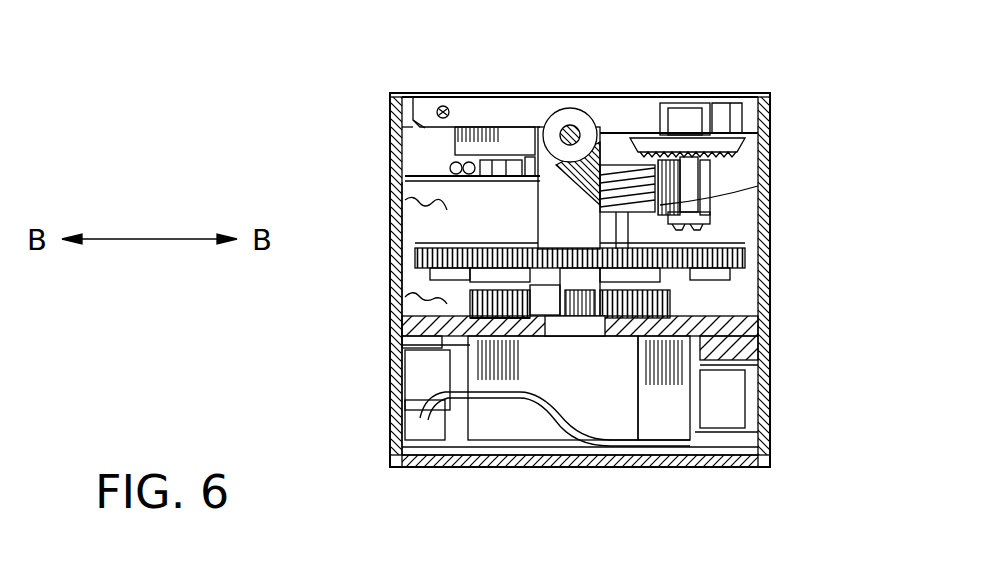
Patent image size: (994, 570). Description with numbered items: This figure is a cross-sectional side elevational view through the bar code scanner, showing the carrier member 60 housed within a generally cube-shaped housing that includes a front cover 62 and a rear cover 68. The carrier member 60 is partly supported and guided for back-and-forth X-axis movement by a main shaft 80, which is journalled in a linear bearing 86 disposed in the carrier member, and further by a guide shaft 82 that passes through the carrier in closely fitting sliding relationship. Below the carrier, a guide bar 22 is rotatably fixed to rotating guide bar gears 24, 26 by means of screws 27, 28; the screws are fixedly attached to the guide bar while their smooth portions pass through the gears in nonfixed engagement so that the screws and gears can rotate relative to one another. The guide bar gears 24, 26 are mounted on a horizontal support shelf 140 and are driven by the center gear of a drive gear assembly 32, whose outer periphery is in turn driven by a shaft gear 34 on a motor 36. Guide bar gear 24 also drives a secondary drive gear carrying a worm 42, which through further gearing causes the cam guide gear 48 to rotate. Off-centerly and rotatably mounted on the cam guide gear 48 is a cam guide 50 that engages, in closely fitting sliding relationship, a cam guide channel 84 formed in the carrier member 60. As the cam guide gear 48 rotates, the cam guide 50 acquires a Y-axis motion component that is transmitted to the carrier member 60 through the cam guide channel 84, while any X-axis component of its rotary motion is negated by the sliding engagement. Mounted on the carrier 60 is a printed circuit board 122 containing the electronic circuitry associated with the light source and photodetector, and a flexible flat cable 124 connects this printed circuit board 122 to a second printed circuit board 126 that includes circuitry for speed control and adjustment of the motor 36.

The guide bar 22 is at (398, 185).
The guide bar gear 24 is at (762, 258).
The guide bar gear 26 is at (412, 255).
The screw 27 is at (642, 294).
The screw 28 is at (420, 283).
The drive gear assembly 32 is at (412, 348).
The shaft gear 34 is at (618, 336).
The motor 36 is at (660, 415).
The worm 42 is at (762, 180).
The cam guide gear 48 is at (762, 118).
The cam guide 50 is at (692, 98).
The carrier member 60 is at (637, 98).
The front cover 62 is at (392, 226).
The rear cover 68 is at (745, 430).
The main shaft 80 is at (605, 93).
The guide shaft 82 is at (442, 106).
The cam guide channel 84 is at (725, 97).
The linear bearing 86 is at (568, 132).
The printed circuit board 122 is at (478, 237).
The flexible flat cable 124 is at (428, 392).
The printed circuit board 126 is at (752, 466).
The horizontal support shelf 140 is at (745, 342).